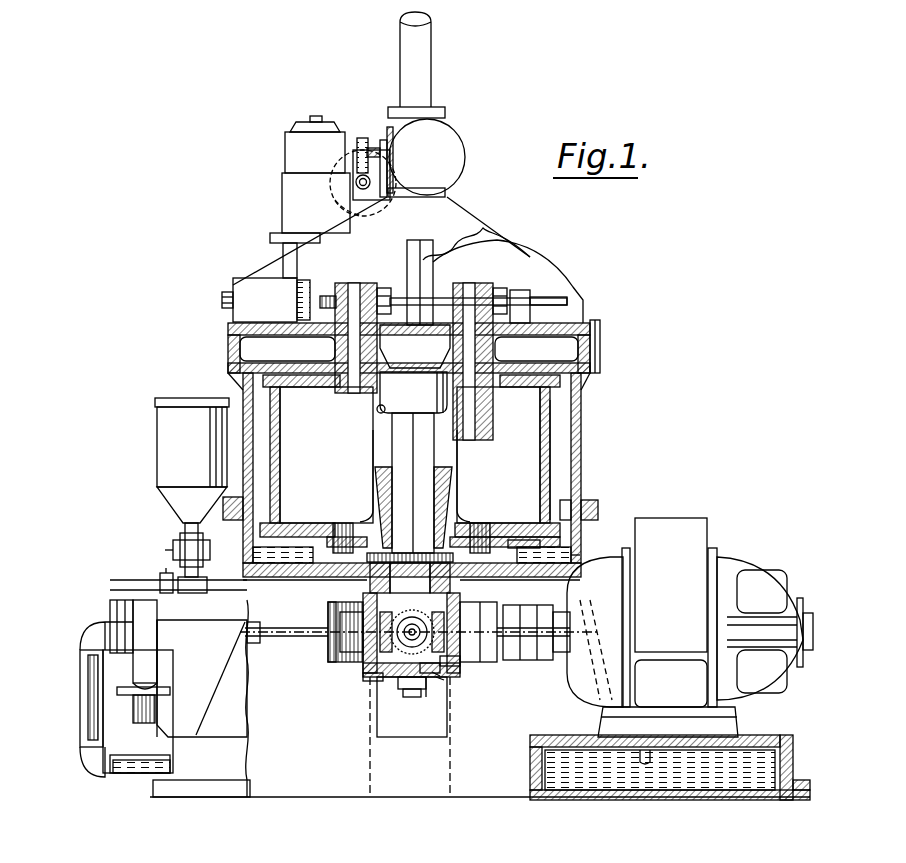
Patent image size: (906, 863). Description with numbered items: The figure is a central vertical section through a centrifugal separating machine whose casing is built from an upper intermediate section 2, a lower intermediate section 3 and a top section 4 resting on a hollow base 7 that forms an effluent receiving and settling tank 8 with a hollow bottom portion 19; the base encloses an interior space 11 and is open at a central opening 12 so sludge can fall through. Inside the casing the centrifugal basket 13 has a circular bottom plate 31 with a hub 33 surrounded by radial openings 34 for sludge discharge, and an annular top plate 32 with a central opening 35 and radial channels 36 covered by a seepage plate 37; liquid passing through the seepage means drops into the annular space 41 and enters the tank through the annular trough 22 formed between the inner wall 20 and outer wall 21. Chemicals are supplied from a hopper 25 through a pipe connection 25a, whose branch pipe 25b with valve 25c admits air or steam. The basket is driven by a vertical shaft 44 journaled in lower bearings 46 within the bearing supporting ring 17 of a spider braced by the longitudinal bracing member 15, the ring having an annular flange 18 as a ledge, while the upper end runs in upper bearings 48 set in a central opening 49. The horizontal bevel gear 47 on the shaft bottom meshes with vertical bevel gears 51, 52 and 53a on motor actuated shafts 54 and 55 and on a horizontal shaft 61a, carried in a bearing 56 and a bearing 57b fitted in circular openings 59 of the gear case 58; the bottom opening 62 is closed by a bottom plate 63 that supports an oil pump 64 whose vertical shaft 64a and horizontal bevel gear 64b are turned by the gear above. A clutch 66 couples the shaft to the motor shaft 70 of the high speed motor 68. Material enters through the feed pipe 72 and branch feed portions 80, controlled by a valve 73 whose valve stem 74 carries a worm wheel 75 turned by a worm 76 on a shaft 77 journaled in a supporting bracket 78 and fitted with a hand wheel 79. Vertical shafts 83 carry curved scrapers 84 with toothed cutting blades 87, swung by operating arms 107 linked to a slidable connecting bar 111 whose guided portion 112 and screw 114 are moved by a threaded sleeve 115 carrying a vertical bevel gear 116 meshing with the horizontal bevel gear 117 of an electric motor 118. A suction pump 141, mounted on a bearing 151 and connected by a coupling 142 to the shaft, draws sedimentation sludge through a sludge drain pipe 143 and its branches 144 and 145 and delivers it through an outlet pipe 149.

The upper intermediate section 2 is at (600, 346).
The lower intermediate section 3 is at (582, 440).
The top section 4 is at (408, 260).
The hollow base 7 is at (222, 668).
The effluent receiving and settling tank 8 is at (625, 785).
The interior space 11 is at (405, 737).
The central opening 12 is at (360, 797).
The centrifugal basket 13 is at (544, 477).
The longitudinal bracing member 15 is at (320, 580).
The bearing supporting ring 17 is at (363, 588).
The annular flange 18 is at (410, 578).
The bottom portion of the base 19 is at (578, 738).
The inner wall 20 is at (520, 556).
The outer wall 21 is at (578, 548).
The annular trough 22 is at (572, 555).
The chemical hopper 25 is at (192, 487).
The pipe connection 25a is at (200, 565).
The branch pipe 25b is at (118, 580).
The valve 25c is at (163, 573).
The bottom plate 31 is at (518, 530).
The top plate 32 is at (530, 365).
The hub 33 is at (448, 500).
The radial openings 34 is at (348, 528).
The central opening 35 is at (336, 345).
The radial channels 36 is at (287, 349).
The seepage plate 37 is at (308, 387).
The annular space 41 is at (402, 475).
The vertical shaft 44 is at (413, 483).
The lower bearings 46 is at (367, 558).
The horizontal bevel gear 47 is at (372, 610).
The upper bearings 48 is at (413, 392).
The central opening 49 is at (378, 410).
The vertical bevel gear 51 is at (448, 606).
The vertical bevel gear 52 is at (372, 676).
The vertical bevel gear 53a is at (345, 625).
The motor actuated shaft 54 is at (460, 662).
The motor actuated shaft 55 is at (340, 640).
The bearing 56 is at (515, 632).
The bearing 57b is at (340, 650).
The gear case 58 is at (370, 681).
The circular openings 59 is at (440, 670).
The horizontal shaft 61a is at (290, 628).
The bottom opening 62 is at (404, 689).
The bottom plate 63 is at (428, 697).
The oil pump 64 is at (410, 697).
The vertical shaft 64a is at (446, 684).
The horizontal bevel gear 64b is at (440, 680).
The clutch 66 is at (528, 605).
The high speed motor 68 is at (690, 627).
The motor shaft 70 is at (562, 612).
The feed pipe 72 is at (422, 80).
The valve 73 is at (447, 140).
The valve stem 74 is at (383, 140).
The worm wheel 75 is at (361, 138).
The worm 76 is at (348, 168).
The shaft 77 is at (371, 180).
The supporting bracket 78 is at (374, 200).
The hand wheel 79 is at (334, 205).
The branch feed portions 80 is at (420, 344).
The vertical shafts 83 is at (340, 345).
The curved scrapers 84 is at (410, 455).
The toothed cutting blades 87 is at (280, 437).
The operating arms 107 is at (386, 290).
The slidable connecting bar 111 is at (443, 298).
The guided portion 112 is at (548, 290).
The screw 114 is at (330, 296).
The threaded sleeve 115 is at (312, 262).
The vertical bevel gear 116 is at (297, 296).
The horizontal bevel gear 117 is at (303, 280).
The electric motor 118 is at (310, 179).
The suction pump 141 is at (133, 605).
The coupling 142 is at (252, 643).
The sludge drain pipe 143 is at (100, 728).
The branch 144 is at (115, 775).
The branch 145 is at (148, 773).
The outlet pipe 149 is at (156, 710).
The bearing 151 is at (179, 678).